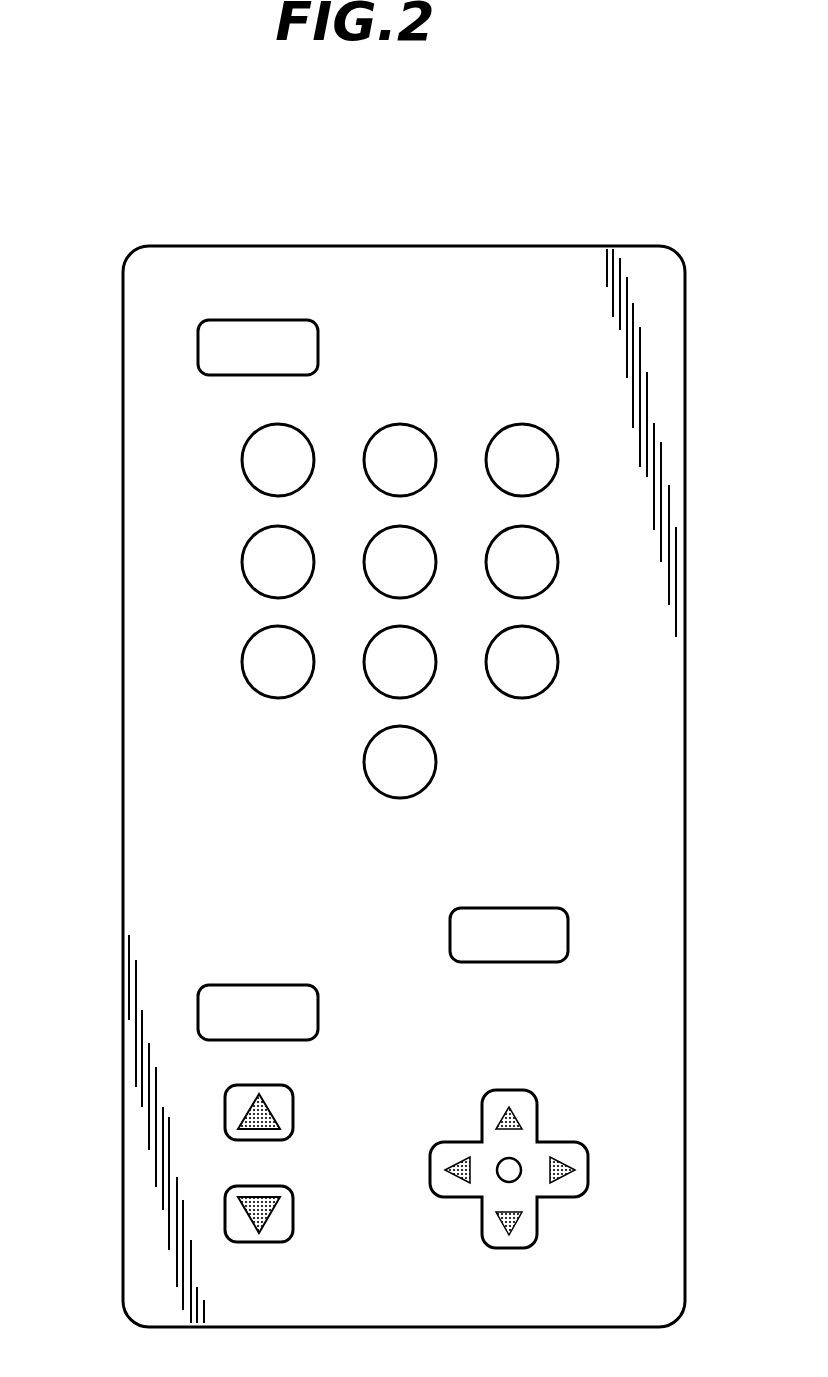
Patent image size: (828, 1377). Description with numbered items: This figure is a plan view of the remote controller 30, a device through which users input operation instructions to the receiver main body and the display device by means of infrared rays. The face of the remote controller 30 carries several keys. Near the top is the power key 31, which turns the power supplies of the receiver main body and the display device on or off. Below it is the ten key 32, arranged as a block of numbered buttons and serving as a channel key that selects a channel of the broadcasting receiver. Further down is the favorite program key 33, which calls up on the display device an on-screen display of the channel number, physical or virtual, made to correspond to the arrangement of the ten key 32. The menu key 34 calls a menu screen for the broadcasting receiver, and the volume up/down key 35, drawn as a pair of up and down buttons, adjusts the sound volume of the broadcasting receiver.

The remote controller 30 is at (634, 272).
The power key 31 is at (207, 340).
The ten key 32 is at (212, 575).
The favorite program key 33 is at (563, 915).
The menu key 34 is at (213, 1013).
The volume up/down key 35 is at (208, 1168).